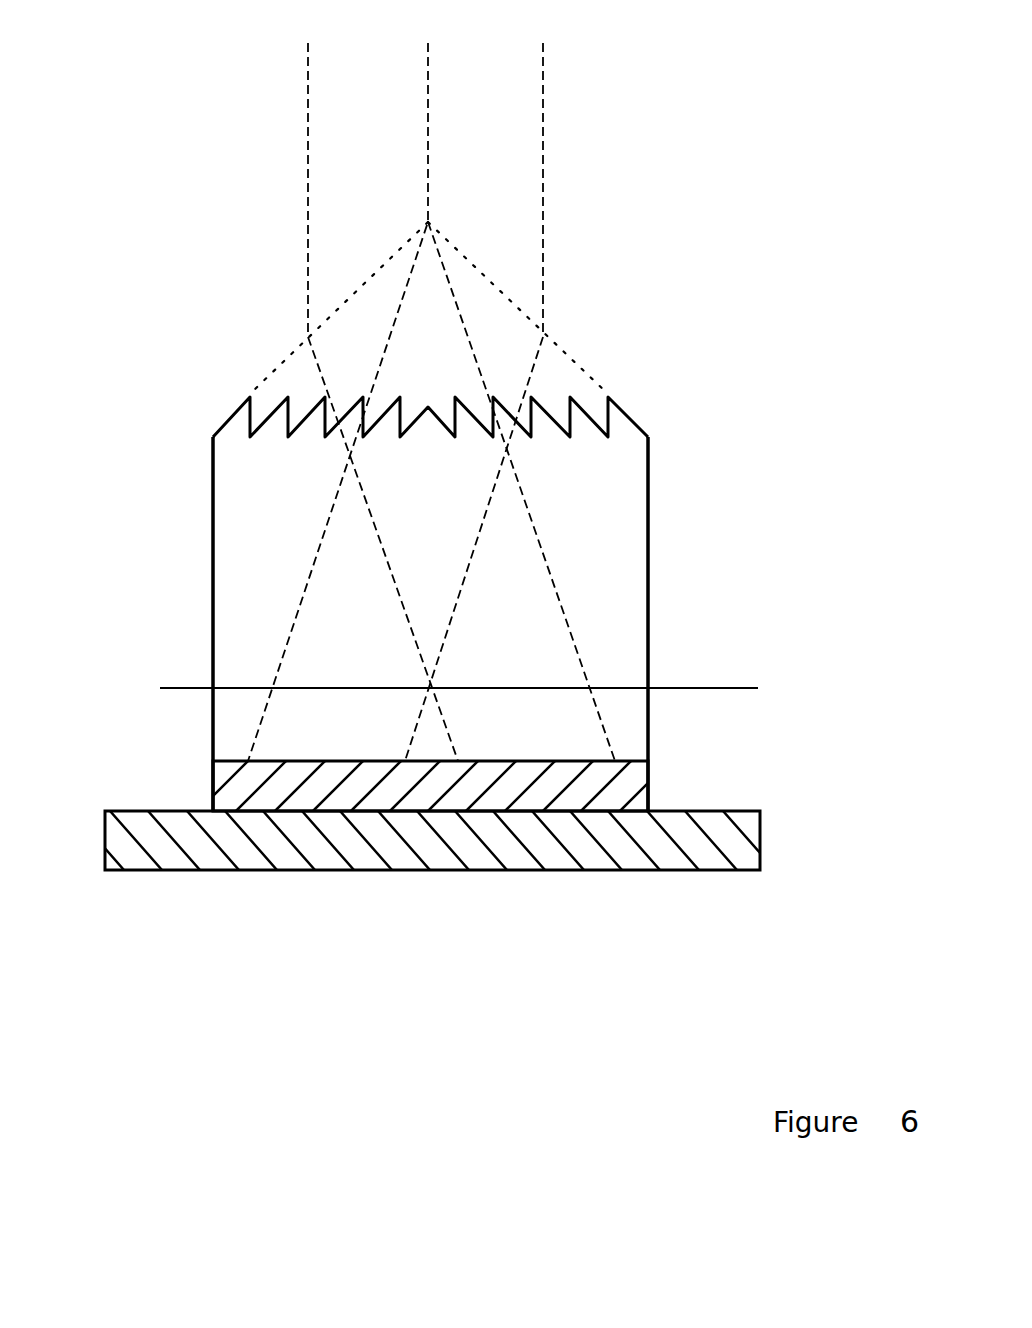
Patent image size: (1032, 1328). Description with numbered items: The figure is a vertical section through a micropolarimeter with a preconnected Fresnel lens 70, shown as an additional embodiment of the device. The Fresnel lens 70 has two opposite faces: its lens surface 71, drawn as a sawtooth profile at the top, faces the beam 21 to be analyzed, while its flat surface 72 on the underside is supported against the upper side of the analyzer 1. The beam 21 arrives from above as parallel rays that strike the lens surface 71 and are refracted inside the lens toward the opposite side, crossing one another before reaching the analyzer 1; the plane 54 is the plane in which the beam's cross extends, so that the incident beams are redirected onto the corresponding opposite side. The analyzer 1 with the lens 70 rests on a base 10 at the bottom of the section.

The analyzer 1 is at (700, 780).
The substrate / base 10 is at (808, 842).
The beam 21 is at (505, 122).
The plane 54 is at (195, 688).
The Fresnel lens 70 is at (693, 573).
The lens surface 71 is at (630, 408).
The flat surface 72 is at (307, 755).